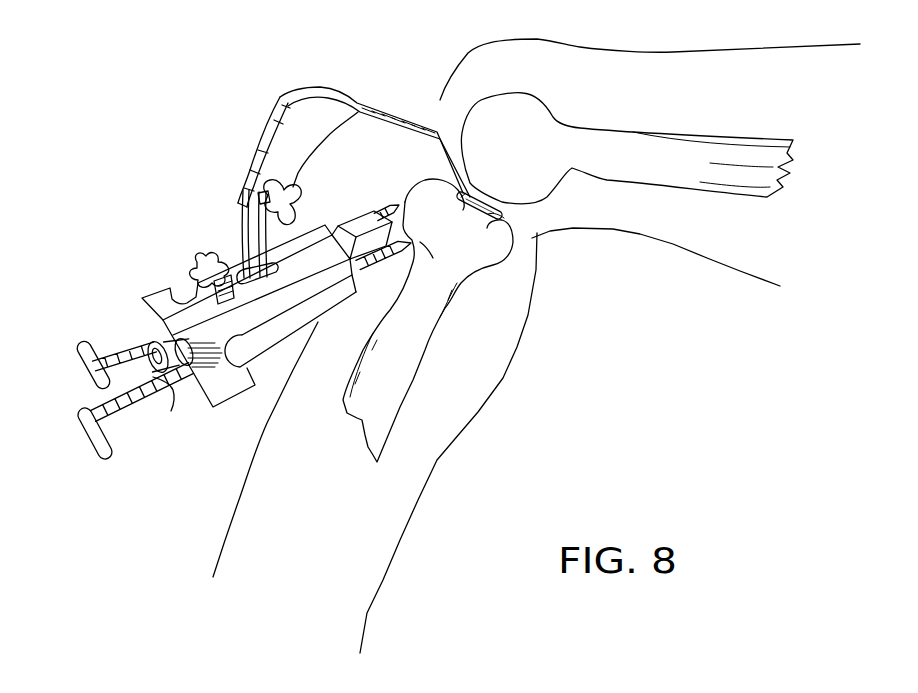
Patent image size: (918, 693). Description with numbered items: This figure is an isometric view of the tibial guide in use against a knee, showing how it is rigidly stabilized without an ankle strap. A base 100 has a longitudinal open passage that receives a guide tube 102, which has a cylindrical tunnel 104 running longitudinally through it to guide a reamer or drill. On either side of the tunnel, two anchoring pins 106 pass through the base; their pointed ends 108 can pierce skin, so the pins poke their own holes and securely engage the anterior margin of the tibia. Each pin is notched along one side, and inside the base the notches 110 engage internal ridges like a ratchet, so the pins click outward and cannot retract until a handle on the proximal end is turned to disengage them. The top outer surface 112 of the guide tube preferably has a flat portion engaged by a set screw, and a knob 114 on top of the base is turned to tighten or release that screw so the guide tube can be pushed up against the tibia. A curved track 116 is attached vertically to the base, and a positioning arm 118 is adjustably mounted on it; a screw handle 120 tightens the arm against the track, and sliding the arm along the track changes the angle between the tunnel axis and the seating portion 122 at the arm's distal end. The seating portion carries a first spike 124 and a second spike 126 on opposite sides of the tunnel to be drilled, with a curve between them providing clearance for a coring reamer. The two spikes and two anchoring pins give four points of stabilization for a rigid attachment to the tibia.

The base 100 is at (270, 338).
The guide tube 102 is at (356, 232).
The cylindrical tunnel 104 is at (123, 348).
The anchoring pins 106 is at (140, 347).
The pointed ends 108 is at (396, 185).
The notches 110 is at (177, 408).
The top outer surface 112 is at (363, 225).
The knob 114 is at (193, 262).
The curved track 116 is at (247, 225).
The positioning arm 118 is at (392, 112).
The screw handle 120 is at (260, 196).
The seating portion 122 is at (487, 200).
The first spike 124 is at (493, 222).
The second spike 126 is at (463, 202).